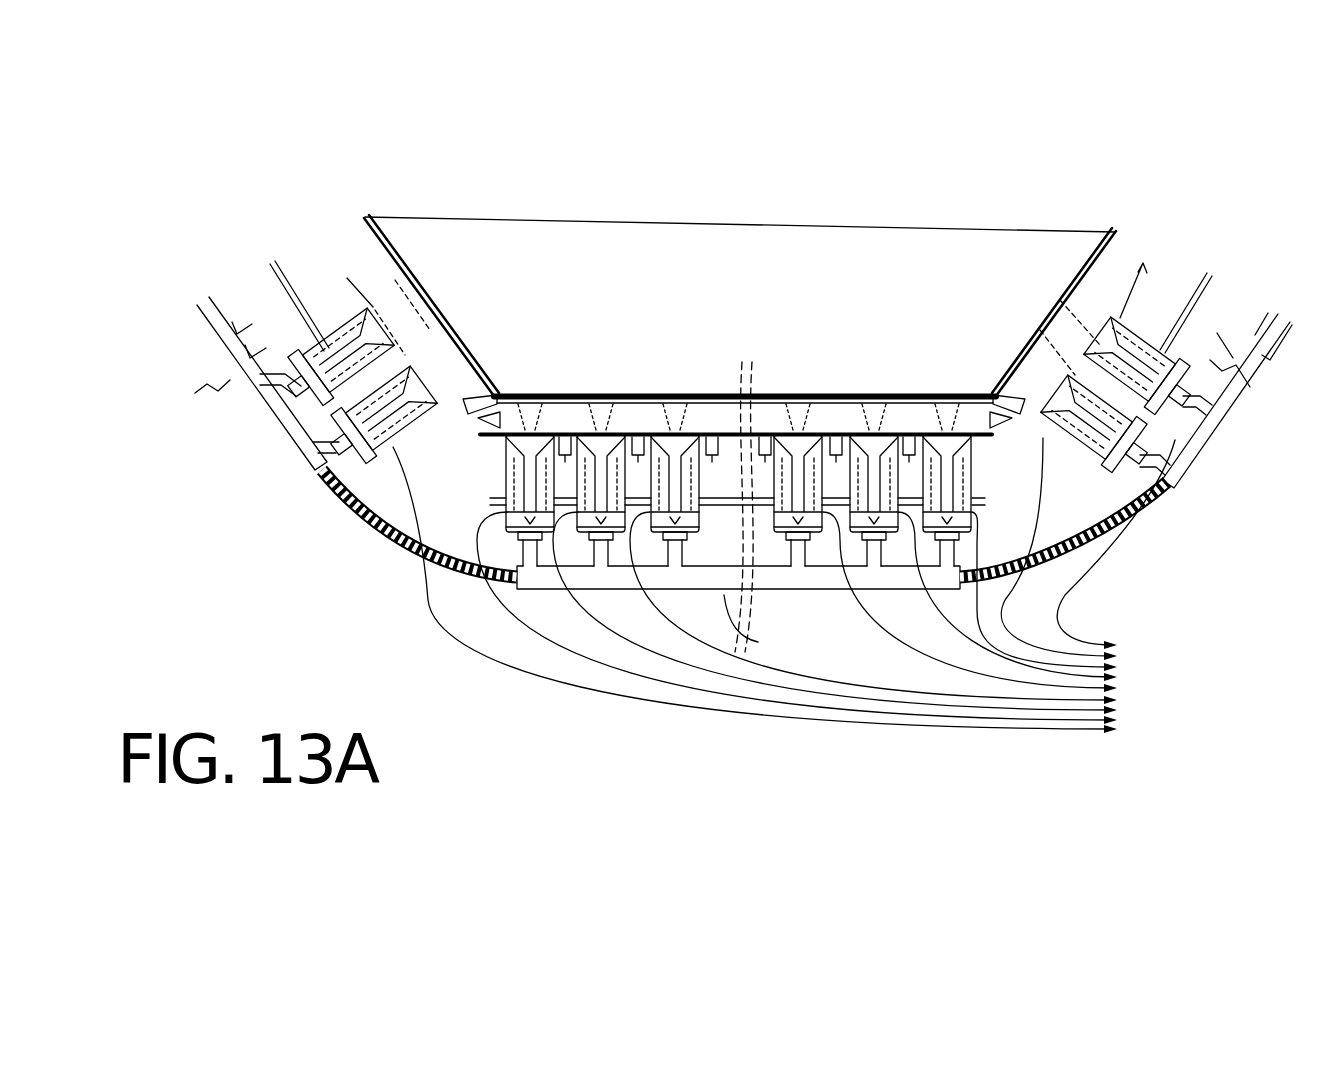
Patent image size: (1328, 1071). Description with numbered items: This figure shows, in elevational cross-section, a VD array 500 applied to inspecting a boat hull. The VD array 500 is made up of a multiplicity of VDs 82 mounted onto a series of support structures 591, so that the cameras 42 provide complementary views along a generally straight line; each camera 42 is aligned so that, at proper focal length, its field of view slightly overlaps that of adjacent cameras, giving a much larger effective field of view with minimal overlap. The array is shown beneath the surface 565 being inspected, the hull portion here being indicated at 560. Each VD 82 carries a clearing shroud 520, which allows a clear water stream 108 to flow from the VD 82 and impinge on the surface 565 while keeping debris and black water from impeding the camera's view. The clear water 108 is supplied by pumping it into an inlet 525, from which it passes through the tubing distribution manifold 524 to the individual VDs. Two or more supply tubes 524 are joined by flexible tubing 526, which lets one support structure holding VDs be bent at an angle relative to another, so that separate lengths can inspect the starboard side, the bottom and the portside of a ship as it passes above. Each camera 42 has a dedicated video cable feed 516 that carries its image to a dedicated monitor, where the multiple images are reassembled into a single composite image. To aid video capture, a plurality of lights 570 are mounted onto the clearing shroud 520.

The VD array 500 is at (1076, 124).
The combustion chamber / housing 560 is at (699, 248).
The surface 565 is at (1125, 245).
The clearing shroud 520 is at (362, 268).
The VD 82 is at (502, 502).
The support structure 591 is at (296, 300).
The clear water stream 108 is at (1043, 343).
The tubing distribution manifold 524 is at (262, 395).
The lights 570 is at (412, 470).
The camera 42 is at (522, 471).
The flexible tubing 526 is at (360, 521).
The inlet 525 is at (758, 642).
The video cable feed 516 is at (1060, 735).